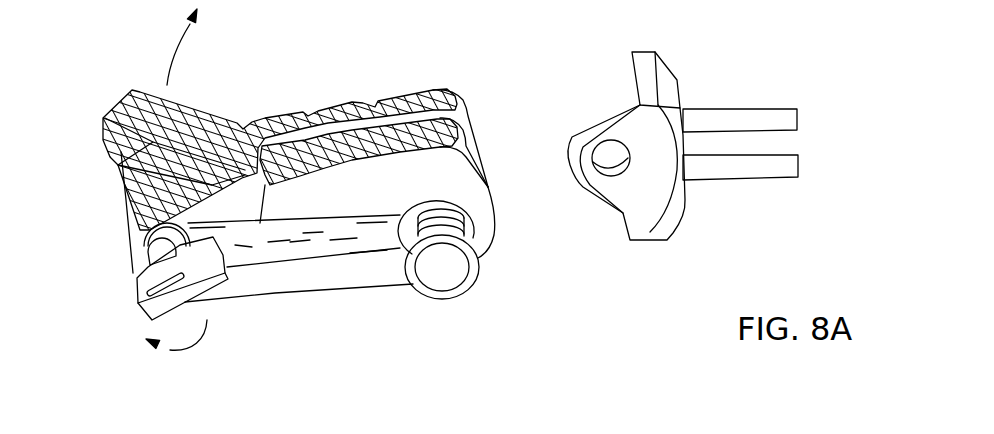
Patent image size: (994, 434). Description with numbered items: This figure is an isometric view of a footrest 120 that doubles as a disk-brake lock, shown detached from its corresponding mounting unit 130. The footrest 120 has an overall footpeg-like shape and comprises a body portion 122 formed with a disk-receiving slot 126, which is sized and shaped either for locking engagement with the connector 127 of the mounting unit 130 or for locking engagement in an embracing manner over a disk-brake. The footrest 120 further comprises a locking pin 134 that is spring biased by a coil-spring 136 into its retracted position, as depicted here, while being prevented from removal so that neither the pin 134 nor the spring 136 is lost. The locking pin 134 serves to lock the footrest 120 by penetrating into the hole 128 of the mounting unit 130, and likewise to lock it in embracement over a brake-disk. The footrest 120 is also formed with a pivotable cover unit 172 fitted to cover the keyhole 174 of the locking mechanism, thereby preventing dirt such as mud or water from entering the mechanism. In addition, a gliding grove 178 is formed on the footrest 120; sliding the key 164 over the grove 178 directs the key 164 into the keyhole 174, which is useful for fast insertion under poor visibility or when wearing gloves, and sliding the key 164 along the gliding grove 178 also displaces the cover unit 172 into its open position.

The footrest 120 is at (305, 213).
The body portion 122 is at (373, 275).
The disk-receiving slot 126 is at (488, 187).
The pivotable cover unit 172 is at (118, 97).
The keyhole 174 is at (133, 256).
The key 164 is at (143, 282).
The gliding grove 178 is at (273, 242).
The coil-spring 136 is at (460, 216).
The locking pin 134 is at (452, 272).
The connector 127 is at (665, 152).
The hole 128 is at (608, 159).
The mounting unit 130 is at (652, 56).